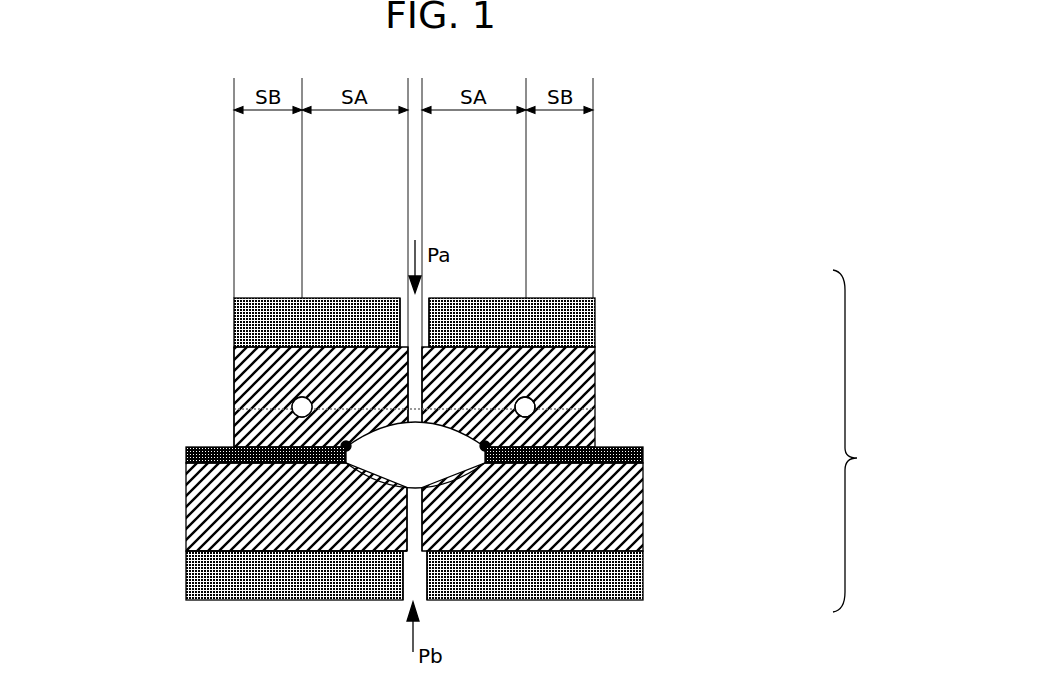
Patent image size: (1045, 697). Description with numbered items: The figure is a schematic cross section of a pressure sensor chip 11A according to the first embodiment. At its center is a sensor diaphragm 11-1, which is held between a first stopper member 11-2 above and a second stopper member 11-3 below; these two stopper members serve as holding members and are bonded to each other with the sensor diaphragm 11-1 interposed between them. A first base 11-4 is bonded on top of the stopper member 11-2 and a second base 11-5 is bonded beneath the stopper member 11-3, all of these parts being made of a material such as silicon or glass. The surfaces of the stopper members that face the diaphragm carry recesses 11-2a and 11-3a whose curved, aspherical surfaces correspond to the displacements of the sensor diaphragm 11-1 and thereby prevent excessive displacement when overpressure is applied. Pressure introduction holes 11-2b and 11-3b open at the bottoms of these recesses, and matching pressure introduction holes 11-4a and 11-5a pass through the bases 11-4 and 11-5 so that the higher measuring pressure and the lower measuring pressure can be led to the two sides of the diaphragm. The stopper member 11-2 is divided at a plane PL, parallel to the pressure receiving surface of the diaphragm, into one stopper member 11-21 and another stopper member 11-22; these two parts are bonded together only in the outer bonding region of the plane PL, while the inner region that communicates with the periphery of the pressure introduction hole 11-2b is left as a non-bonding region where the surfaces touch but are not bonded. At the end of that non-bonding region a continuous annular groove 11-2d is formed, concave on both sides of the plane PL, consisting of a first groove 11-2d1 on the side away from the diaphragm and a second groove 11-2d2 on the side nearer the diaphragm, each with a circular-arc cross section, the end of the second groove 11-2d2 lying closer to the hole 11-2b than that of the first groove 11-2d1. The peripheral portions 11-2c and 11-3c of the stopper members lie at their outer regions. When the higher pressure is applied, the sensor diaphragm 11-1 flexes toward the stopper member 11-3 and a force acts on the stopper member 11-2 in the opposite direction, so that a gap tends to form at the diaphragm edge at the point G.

The pressure sensor chip 11A is at (870, 441).
The sensor diaphragm 11-1 is at (645, 455).
The first stopper member 11-2 is at (594, 368).
The one stopper member 11-21 is at (235, 365).
The other stopper member 11-22 is at (235, 432).
The recess 11-2a is at (437, 440).
The pressure introduction hole 11-2b is at (395, 425).
The peripheral portion 11-2c is at (235, 418).
The annular groove 11-2d is at (300, 397).
The first groove 11-2d1 is at (533, 398).
The second groove 11-2d2 is at (532, 414).
The second stopper member 11-3 is at (645, 490).
The recess 11-3a is at (440, 485).
The pressure introduction hole 11-3b is at (405, 518).
The peripheral portion 11-3c is at (186, 552).
The first base 11-4 is at (594, 310).
The pressure introduction hole 11-4a is at (402, 307).
The second base 11-5 is at (645, 582).
The pressure introduction hole 11-5a is at (403, 585).
The point G is at (335, 455).
The plane PL is at (235, 328).